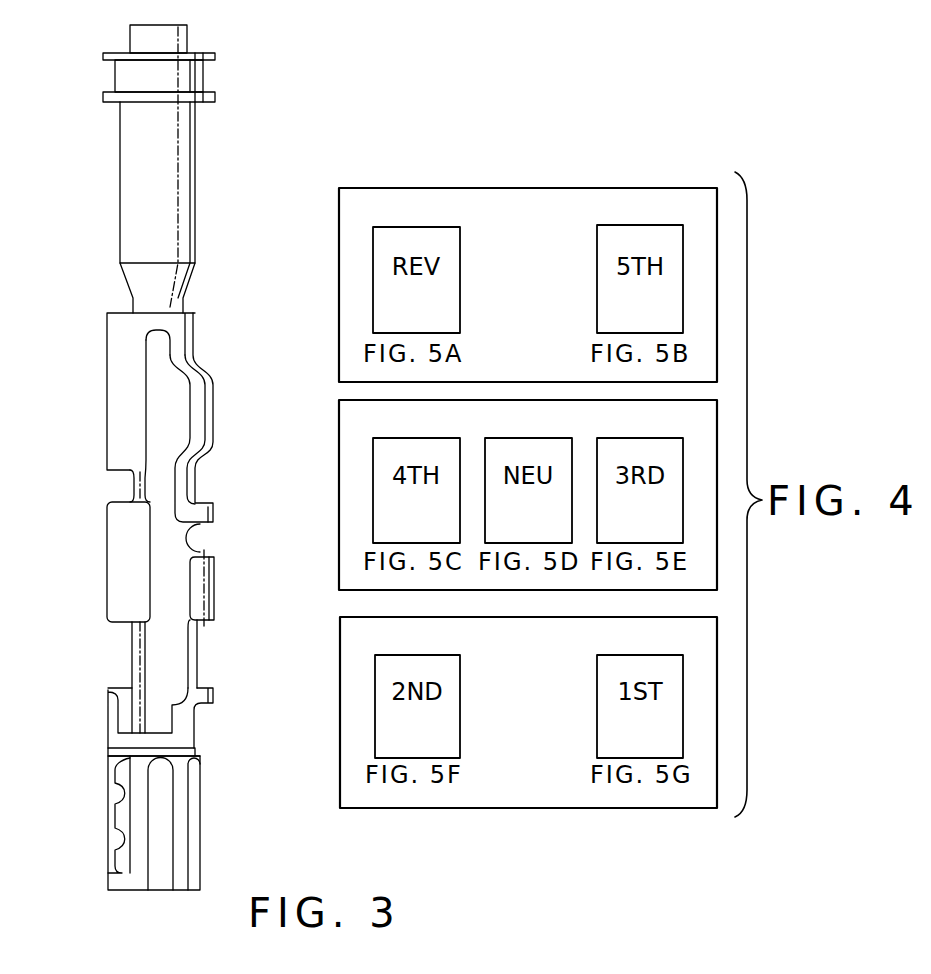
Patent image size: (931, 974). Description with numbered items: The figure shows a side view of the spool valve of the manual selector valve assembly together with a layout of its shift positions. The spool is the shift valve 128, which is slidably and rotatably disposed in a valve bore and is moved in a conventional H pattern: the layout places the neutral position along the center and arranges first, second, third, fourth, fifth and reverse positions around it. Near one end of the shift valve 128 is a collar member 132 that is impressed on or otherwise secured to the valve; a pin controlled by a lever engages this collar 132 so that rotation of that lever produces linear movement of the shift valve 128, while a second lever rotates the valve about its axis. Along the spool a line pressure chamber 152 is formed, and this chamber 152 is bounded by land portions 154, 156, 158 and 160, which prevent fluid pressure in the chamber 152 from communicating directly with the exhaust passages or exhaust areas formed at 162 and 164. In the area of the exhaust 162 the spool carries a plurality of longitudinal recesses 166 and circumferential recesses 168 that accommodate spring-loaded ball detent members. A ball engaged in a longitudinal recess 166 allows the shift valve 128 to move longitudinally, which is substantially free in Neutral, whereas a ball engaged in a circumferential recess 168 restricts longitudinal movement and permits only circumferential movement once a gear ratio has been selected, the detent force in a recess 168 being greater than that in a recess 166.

The shift valve 128 is at (196, 179).
The collar member 132 is at (188, 82).
The line pressure chamber 152 is at (170, 643).
The land portion 154 is at (213, 697).
The land portion 156 is at (107, 578).
The land portion 158 is at (214, 585).
The land portion 160 is at (105, 392).
The exhaust area 162 is at (182, 870).
The exhaust area 164 is at (193, 338).
The longitudinal recesses 166 is at (192, 882).
The circumferential recesses 168 is at (113, 858).